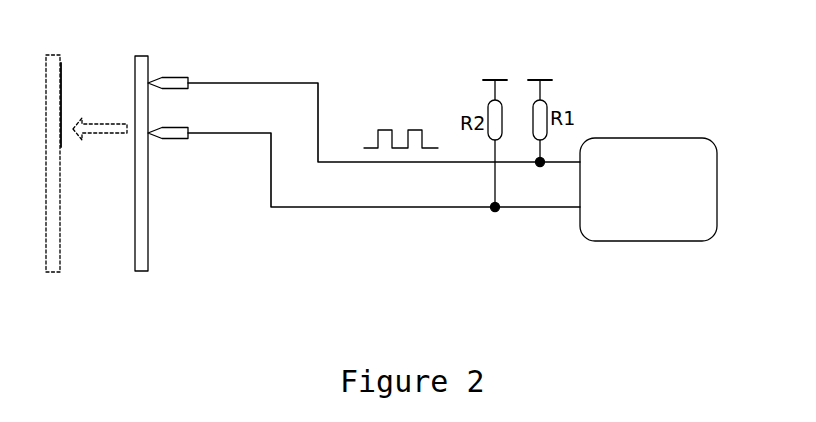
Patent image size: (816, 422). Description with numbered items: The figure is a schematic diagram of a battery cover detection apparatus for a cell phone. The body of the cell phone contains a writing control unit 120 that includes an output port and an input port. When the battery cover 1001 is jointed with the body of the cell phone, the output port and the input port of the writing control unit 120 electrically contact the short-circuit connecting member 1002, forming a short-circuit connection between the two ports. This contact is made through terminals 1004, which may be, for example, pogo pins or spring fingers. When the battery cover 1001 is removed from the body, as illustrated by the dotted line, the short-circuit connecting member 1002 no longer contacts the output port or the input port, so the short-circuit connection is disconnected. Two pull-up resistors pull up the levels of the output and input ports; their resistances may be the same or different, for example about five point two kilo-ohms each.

The battery cover 1001 is at (172, 161).
The short-circuit connecting member 1002 is at (148, 63).
The terminals 1004 is at (172, 88).
The writing control unit 120 is at (693, 160).